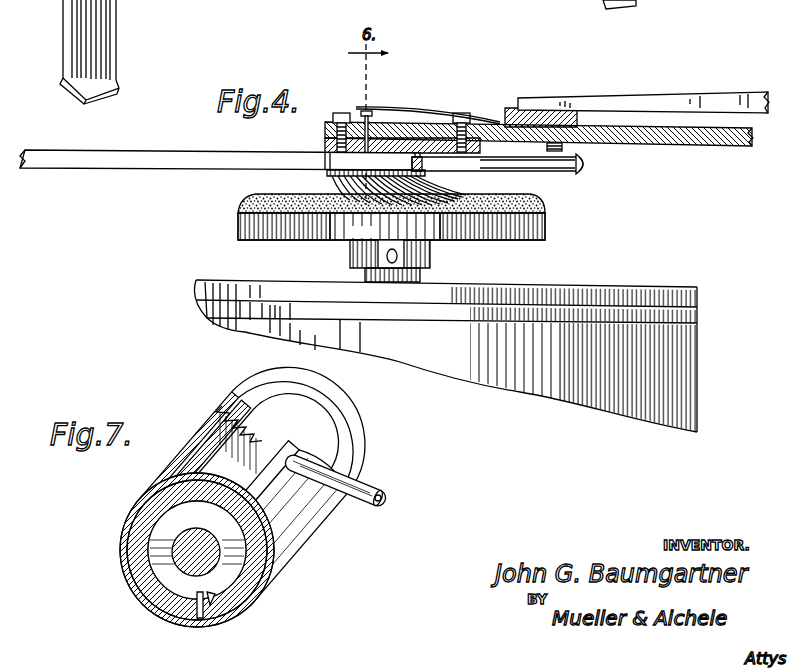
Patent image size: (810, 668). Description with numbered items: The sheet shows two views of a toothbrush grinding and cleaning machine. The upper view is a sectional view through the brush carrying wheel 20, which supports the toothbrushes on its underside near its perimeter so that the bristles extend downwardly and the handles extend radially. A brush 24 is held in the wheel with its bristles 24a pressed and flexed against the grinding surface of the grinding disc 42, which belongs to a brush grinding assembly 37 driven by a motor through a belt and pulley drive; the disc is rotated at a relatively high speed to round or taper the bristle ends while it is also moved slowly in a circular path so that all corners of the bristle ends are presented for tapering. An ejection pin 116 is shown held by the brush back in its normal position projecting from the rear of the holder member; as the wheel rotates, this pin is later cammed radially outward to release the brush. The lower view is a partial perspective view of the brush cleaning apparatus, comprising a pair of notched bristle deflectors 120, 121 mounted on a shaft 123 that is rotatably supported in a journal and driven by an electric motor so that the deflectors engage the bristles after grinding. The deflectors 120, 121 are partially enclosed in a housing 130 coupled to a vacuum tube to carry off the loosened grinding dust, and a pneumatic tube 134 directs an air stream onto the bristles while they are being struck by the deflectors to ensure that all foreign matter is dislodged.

In FIG. 4, the brush carrying wheel 20 is at (651, 90).
In FIG. 4, the toothbrush 24 is at (137, 170).
In FIG. 4, the bristles 24a is at (440, 197).
In FIG. 4, the ejection pin 116 is at (562, 172).
In FIG. 4, the grinding disc 42 is at (540, 232).
In FIG. 4, the brush grinding assembly 37 is at (700, 346).
In FIG. 7, the notched bristle deflector 120 is at (186, 462).
In FIG. 7, the housing 130 is at (248, 387).
In FIG. 7, the shaft 123 is at (172, 566).
In FIG. 7, the notched bristle deflector 121 is at (207, 603).
In FIG. 7, the pneumatic tube 134 is at (362, 503).